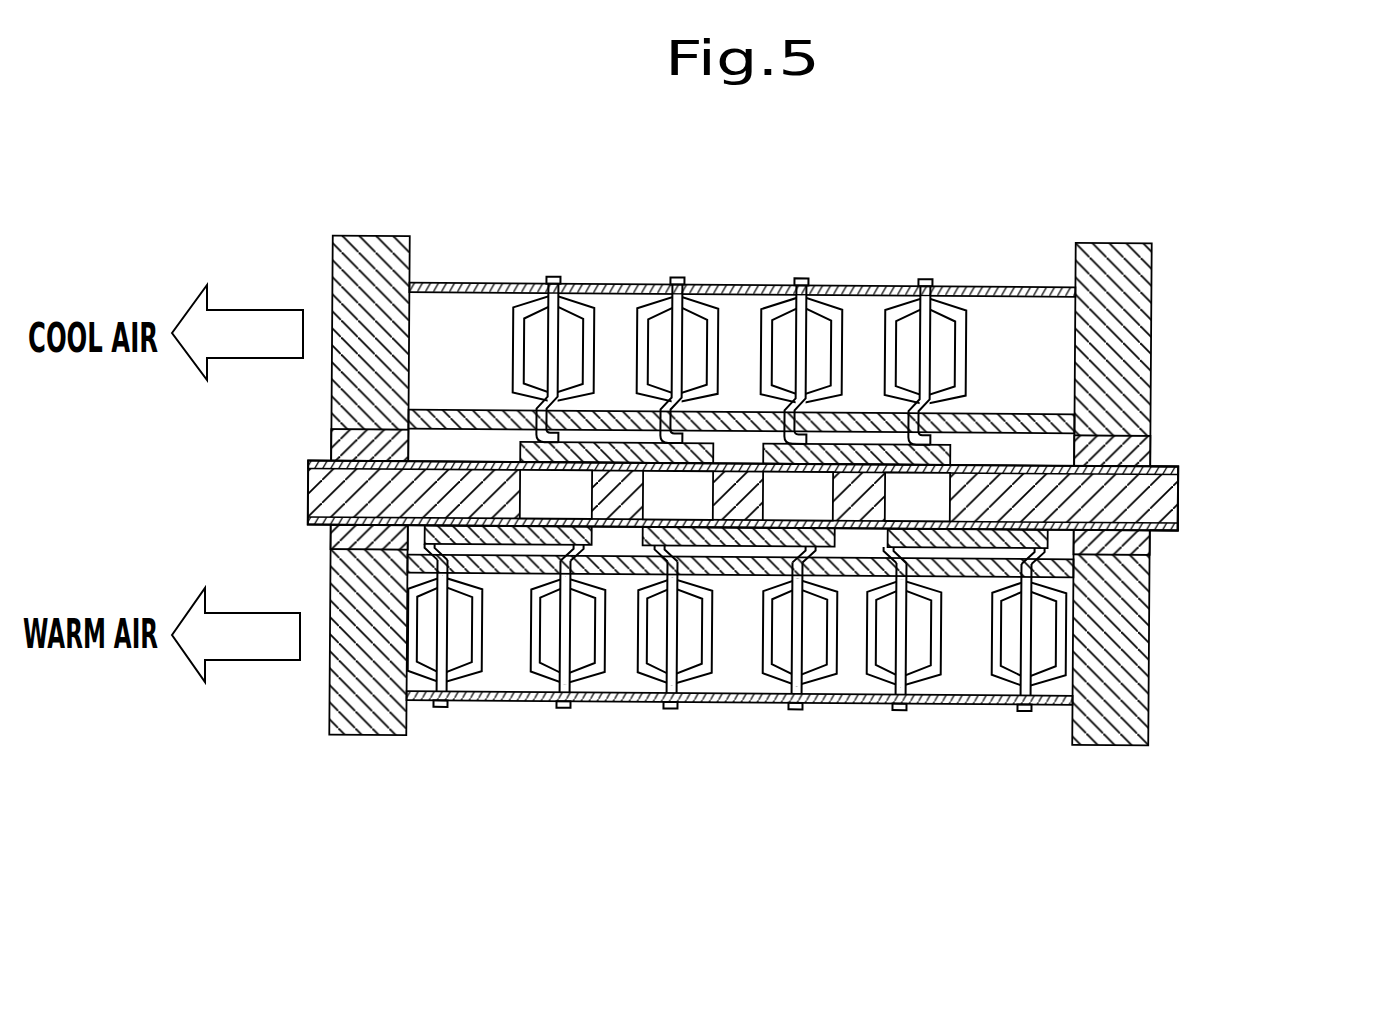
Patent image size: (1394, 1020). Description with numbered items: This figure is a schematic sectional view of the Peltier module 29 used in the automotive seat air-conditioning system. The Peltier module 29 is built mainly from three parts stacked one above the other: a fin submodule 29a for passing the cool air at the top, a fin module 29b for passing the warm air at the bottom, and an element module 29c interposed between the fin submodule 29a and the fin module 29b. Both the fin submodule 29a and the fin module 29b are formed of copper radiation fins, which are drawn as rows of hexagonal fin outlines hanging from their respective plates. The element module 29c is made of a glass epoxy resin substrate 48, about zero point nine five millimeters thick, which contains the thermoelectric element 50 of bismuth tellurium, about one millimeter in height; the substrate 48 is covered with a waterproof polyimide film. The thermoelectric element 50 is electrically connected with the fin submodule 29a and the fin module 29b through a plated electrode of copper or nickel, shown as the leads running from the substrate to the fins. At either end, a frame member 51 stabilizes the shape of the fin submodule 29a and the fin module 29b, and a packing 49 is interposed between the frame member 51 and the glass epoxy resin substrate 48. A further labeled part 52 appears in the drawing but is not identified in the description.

The Peltier module 29 is at (875, 250).
The fin submodule 29a is at (582, 282).
The fin module 29b is at (827, 708).
The element module 29c is at (1183, 493).
The glass epoxy resin substrate 48 is at (317, 488).
The packing 49 is at (310, 520).
The thermoelectric element 50 is at (1047, 527).
The frame member 51 is at (1145, 317).
The insulating layer 52 is at (953, 450).